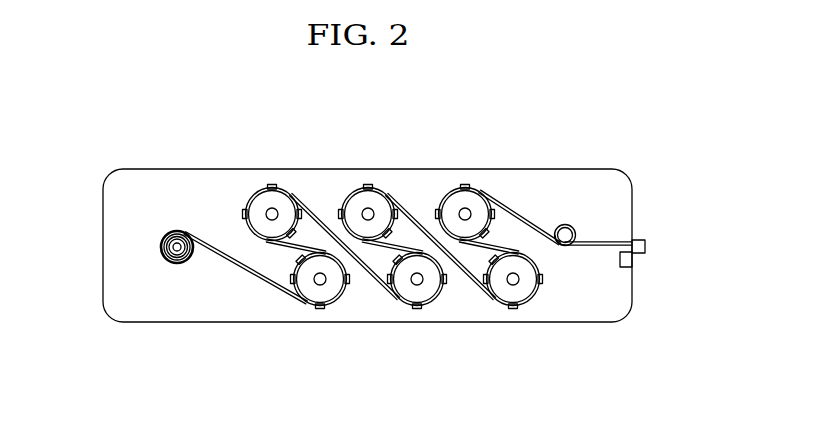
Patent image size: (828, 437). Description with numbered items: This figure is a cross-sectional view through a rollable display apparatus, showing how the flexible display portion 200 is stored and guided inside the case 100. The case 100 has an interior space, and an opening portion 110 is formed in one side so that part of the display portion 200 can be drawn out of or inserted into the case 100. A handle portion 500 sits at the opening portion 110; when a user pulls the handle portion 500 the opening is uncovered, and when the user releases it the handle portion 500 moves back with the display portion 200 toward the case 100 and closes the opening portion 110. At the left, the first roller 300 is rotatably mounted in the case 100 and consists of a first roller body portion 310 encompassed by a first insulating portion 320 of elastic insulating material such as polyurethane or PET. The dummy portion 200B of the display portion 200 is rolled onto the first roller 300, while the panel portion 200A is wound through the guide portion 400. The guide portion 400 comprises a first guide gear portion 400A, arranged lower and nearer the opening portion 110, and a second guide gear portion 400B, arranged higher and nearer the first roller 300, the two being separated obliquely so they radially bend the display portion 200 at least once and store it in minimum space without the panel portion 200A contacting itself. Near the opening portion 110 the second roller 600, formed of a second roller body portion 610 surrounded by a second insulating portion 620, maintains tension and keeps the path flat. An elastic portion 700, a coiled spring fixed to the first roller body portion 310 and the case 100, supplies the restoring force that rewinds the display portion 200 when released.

The case 100 is at (631, 304).
The opening portion 110 is at (620, 229).
The display portion 200 is at (163, 118).
The panel portion 200A is at (245, 261).
The dummy portion 200B is at (207, 243).
The first roller 300 is at (175, 319).
The first roller body portion 310 is at (172, 263).
The first insulating portion 320 is at (179, 263).
The guide portion 400 is at (393, 296).
The first guide gear portion 400A is at (443, 374).
The second guide gear portion 400B is at (462, 236).
The handle portion 500 is at (646, 245).
The second roller 600 is at (560, 166).
The second roller body portion 610 is at (562, 231).
The second insulating portion 620 is at (571, 227).
The elastic portion 700 is at (162, 247).